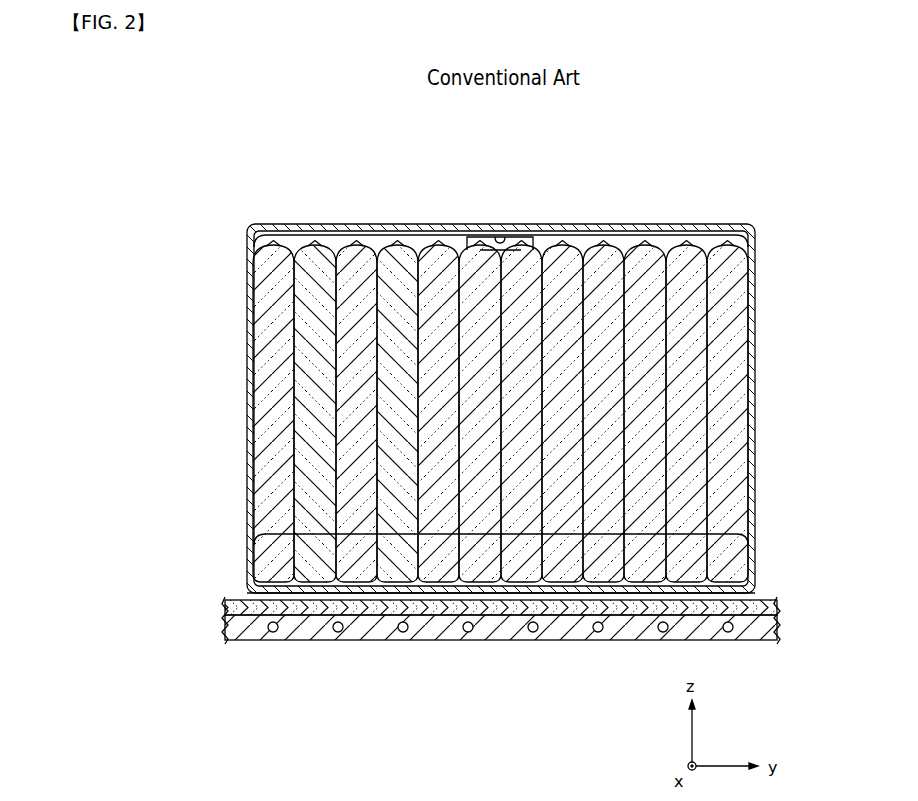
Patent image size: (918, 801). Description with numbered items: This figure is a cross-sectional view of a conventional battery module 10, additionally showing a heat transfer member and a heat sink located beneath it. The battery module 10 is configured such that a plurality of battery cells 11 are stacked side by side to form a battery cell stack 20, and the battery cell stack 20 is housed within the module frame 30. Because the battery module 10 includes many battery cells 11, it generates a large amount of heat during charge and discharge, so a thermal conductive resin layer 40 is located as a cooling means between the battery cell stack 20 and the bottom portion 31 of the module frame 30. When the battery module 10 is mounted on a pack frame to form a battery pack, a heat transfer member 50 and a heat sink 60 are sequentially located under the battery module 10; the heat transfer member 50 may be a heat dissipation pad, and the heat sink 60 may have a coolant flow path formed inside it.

The battery module 10 is at (508, 167).
The battery cell 11 is at (728, 436).
The battery cell stack 20 is at (507, 534).
The module frame 30 is at (247, 272).
The bottom portion 31 is at (271, 584).
The thermal conductive resin layer 40 is at (311, 592).
The heat transfer member 50 is at (377, 614).
The heat sink 60 is at (440, 628).